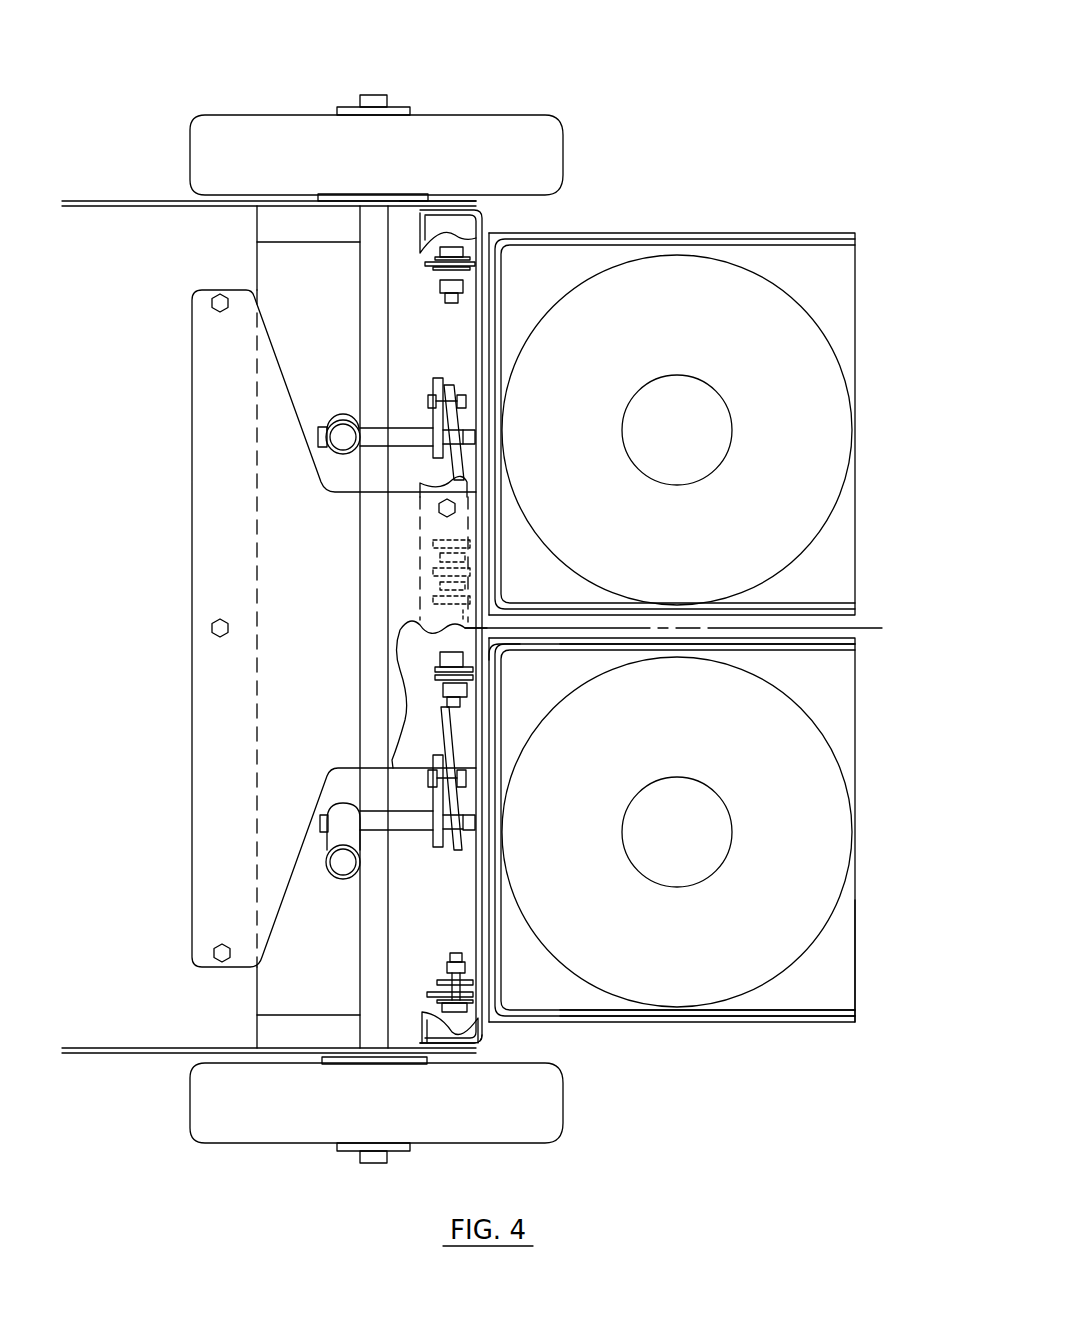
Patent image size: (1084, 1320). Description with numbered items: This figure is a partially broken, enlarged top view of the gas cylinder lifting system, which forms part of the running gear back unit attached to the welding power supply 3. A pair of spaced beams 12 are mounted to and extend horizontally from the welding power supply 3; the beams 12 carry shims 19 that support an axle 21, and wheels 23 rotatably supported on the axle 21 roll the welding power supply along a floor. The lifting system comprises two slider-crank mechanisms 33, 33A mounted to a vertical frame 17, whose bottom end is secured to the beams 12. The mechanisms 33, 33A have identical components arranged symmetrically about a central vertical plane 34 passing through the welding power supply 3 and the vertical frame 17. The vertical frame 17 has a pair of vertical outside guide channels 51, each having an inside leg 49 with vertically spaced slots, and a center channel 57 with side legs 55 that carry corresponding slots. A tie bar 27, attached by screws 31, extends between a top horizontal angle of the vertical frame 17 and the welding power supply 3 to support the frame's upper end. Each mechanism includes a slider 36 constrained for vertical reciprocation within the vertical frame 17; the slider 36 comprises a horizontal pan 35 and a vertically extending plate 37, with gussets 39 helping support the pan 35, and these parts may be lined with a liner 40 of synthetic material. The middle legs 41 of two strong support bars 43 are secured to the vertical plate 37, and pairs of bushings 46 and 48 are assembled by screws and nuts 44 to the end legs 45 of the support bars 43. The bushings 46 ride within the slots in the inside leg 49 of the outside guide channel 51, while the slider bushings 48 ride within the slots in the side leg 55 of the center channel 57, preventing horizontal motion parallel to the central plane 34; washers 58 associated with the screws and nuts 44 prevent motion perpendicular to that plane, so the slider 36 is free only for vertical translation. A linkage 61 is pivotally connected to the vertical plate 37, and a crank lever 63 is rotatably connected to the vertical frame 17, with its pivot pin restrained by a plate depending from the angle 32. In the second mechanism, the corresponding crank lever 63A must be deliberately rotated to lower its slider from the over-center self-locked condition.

The welding power supply 3 is at (119, 785).
The beams 12 is at (273, 227).
The vertical frame 17 is at (487, 208).
The shims 19 is at (430, 195).
The axle 21 is at (372, 912).
The wheels 23 is at (420, 130).
The tie bar 27 is at (298, 652).
The screws 31 is at (216, 300).
The angle 32 is at (482, 1037).
The slider-crank mechanism 33 is at (690, 1022).
The slider-crank mechanism 33A is at (732, 230).
The central vertical plane 34 is at (874, 632).
The horizontal pan 35 is at (824, 603).
The slider 36 is at (862, 990).
The vertically extending plate 37 is at (495, 342).
The gussets 39 is at (756, 645).
The liner 40 is at (800, 1014).
The middle legs 41 is at (486, 426).
The support bars 43 is at (426, 276).
The screws and nuts 44 is at (447, 300).
The end legs 45 is at (420, 576).
The bushings 46 is at (428, 266).
The slider bushings 48 is at (440, 677).
The inside leg 49 is at (490, 270).
The outside guide channels 51 is at (489, 220).
The side legs 55 is at (420, 590).
The center channel 57 is at (502, 650).
The washers 58 is at (430, 242).
The linkage 61 is at (452, 852).
The crank lever 63 is at (328, 856).
The crank lever 63A is at (326, 420).